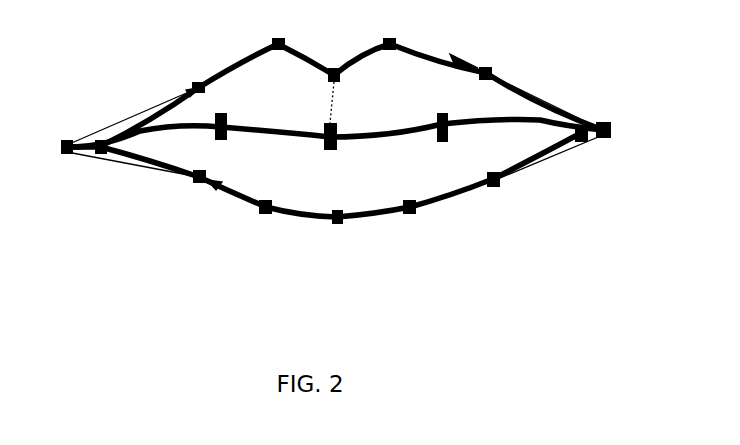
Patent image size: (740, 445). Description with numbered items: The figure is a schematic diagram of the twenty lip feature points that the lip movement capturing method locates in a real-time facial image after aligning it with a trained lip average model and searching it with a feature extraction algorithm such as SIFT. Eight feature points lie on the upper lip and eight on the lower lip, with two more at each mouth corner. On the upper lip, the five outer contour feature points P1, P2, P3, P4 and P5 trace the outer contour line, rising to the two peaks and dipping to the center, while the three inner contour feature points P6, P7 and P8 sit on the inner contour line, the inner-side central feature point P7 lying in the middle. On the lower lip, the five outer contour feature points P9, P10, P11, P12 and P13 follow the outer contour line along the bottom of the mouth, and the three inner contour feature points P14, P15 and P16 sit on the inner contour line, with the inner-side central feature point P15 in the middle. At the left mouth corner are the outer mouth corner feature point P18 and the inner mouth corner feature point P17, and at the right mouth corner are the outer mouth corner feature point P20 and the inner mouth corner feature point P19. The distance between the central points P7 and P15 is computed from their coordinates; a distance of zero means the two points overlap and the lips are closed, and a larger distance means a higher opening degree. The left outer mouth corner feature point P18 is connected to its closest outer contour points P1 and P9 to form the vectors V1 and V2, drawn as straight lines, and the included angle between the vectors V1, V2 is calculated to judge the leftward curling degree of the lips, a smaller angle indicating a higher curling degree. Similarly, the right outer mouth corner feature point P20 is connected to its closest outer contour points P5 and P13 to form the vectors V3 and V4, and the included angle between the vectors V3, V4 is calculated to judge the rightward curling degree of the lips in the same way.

The upper lip outer contour feature point P1 is at (193, 75).
The upper lip outer contour feature point P2 is at (273, 34).
The upper lip outer contour feature point P3 is at (338, 61).
The upper lip outer contour feature point P4 is at (394, 34).
The upper lip outer contour feature point P5 is at (491, 65).
The upper lip inner contour feature point P6 is at (225, 111).
The inner-side central feature point of the upper lip P7 is at (330, 123).
The upper lip inner contour feature point P8 is at (440, 111).
The lower lip outer contour feature point P9 is at (197, 189).
The lower lip outer contour feature point P10 is at (275, 219).
The lower lip outer contour feature point P11 is at (338, 229).
The lower lip outer contour feature point P12 is at (414, 219).
The lower lip outer contour feature point P13 is at (501, 190).
The lower lip inner contour feature point P14 is at (222, 142).
The inner-side central feature point of the lower lip P15 is at (334, 153).
The lower lip inner contour feature point P16 is at (440, 142).
The left inner mouth corner feature point P17 is at (107, 160).
The left-side outer mouth corner feature point P18 is at (61, 160).
The right inner mouth corner feature point P19 is at (581, 143).
The right-side outer mouth corner feature point P20 is at (620, 131).
The vector V1 is at (132, 116).
The vector V2 is at (144, 177).
The vector V3 is at (526, 92).
The vector V4 is at (536, 164).